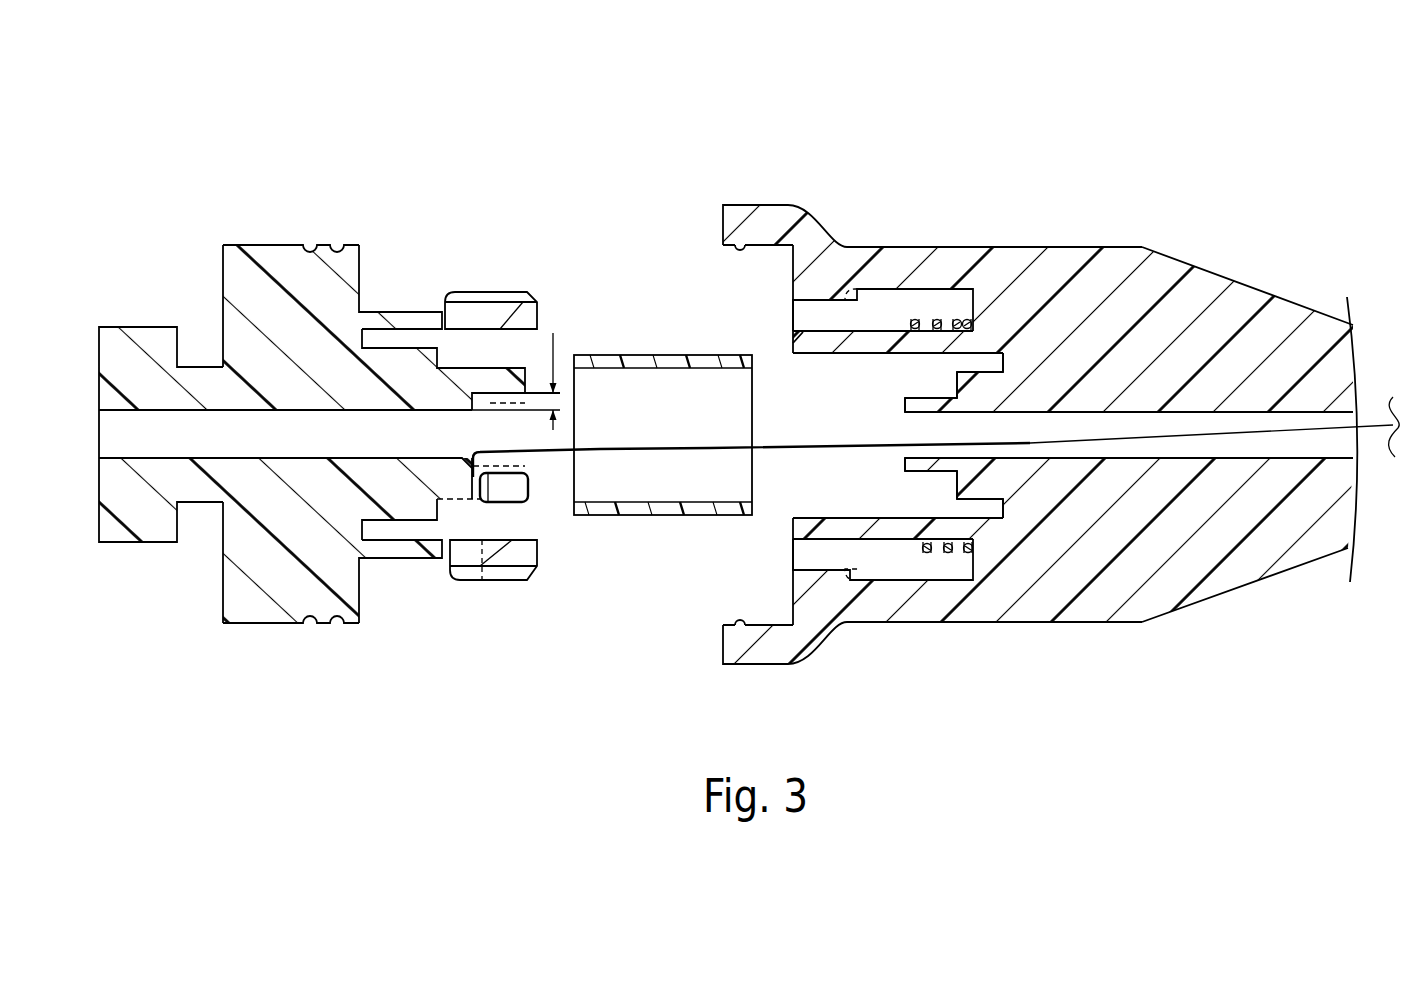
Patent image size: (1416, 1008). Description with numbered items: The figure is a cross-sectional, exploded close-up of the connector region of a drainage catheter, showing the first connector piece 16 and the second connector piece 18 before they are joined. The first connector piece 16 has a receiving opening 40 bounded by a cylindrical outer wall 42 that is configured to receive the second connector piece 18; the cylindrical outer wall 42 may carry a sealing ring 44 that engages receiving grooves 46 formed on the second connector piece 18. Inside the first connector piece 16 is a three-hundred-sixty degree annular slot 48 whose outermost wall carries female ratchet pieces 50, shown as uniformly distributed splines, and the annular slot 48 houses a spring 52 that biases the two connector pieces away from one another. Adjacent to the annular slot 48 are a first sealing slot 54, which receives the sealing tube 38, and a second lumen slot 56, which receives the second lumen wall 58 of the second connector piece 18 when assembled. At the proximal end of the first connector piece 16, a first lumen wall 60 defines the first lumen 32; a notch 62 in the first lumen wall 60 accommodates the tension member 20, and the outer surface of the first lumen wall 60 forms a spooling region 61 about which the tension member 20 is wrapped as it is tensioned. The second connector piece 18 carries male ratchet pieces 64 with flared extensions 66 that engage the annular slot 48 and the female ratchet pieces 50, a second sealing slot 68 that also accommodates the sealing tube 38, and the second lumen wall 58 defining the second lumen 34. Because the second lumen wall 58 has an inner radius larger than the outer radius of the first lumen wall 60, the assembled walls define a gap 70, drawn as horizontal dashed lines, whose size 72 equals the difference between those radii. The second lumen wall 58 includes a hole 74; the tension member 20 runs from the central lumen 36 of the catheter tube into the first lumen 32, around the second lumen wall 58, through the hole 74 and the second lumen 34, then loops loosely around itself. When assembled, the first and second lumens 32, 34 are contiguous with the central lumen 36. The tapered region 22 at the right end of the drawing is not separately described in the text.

The first connector piece 16 is at (1070, 268).
The second connector piece 18 is at (231, 255).
The tension member 20 is at (1370, 425).
The tapered portion 22 is at (1206, 288).
The first lumen 32 is at (983, 420).
The second lumen 34 is at (200, 410).
The central lumen 36 is at (1356, 421).
The sealing tube 38 is at (652, 355).
The receiving opening 40 is at (742, 599).
The cylindrical outer wall 42 is at (733, 225).
The sealing ring 44 is at (735, 258).
The receiving grooves 46 is at (311, 248).
The annular slot 48 is at (886, 317).
The female ratchet pieces 50 is at (866, 292).
The spring 52 is at (909, 340).
The first sealing slot 54 is at (985, 510).
The second lumen slot 56 is at (918, 380).
The second lumen wall 58 is at (500, 385).
The first lumen wall 60 is at (923, 468).
The spooling region 61 is at (940, 468).
The notch 62 is at (907, 472).
The male ratchet pieces 64 is at (528, 552).
The flared extensions 66 is at (500, 568).
The second sealing slot 68 is at (473, 370).
The gap 70 is at (483, 392).
The size of the gap 72 is at (553, 333).
The hole 74 is at (483, 500).